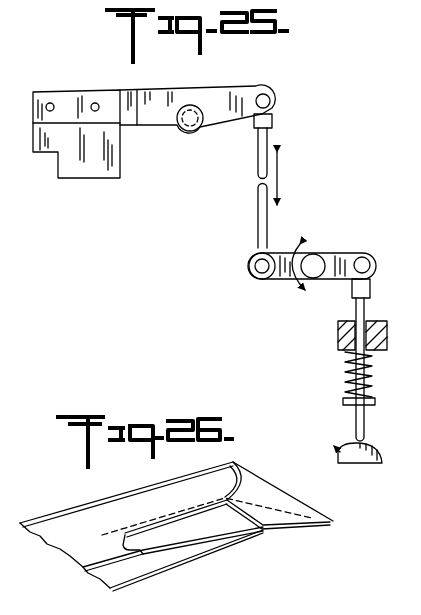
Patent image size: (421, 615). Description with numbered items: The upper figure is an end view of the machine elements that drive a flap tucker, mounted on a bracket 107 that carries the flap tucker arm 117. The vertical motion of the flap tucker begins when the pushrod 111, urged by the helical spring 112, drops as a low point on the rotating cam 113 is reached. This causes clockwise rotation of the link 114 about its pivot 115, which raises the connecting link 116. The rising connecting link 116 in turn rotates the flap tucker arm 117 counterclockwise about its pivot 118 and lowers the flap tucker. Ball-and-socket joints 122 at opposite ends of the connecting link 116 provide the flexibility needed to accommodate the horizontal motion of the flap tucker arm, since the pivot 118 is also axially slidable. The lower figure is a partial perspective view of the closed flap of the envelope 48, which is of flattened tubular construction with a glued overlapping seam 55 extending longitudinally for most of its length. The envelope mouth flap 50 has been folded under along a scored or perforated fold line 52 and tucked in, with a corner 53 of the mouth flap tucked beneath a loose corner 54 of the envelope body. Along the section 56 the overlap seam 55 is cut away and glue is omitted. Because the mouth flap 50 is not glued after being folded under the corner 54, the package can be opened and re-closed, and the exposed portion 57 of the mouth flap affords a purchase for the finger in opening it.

In FIG. 25, the bracket 107 is at (104, 185).
In FIG. 25, the flap tucker arm 117 is at (244, 85).
In FIG. 25, the pivot 118 is at (198, 130).
In FIG. 25, the ball-and-socket joints 122 is at (270, 102).
In FIG. 25, the connecting link 116 is at (272, 152).
In FIG. 25, the link 114 is at (347, 252).
In FIG. 25, the pivot 115 is at (322, 287).
In FIG. 25, the pushrod 111 is at (365, 428).
In FIG. 25, the helical spring 112 is at (372, 390).
In FIG. 25, the rotating cam 113 is at (381, 468).
In FIG. 26, the envelope 48 is at (88, 504).
In FIG. 26, the corner of the mouth flap 53 is at (205, 478).
In FIG. 26, the loose corner of the envelope body 54 is at (243, 478).
In FIG. 26, the envelope mouth flap 50 is at (265, 486).
In FIG. 26, the fold line 52 is at (296, 498).
In FIG. 26, the section 56 is at (175, 520).
In FIG. 26, the exposed portion of the mouth flap 57 is at (265, 528).
In FIG. 26, the glued overlapping seam 55 is at (130, 548).